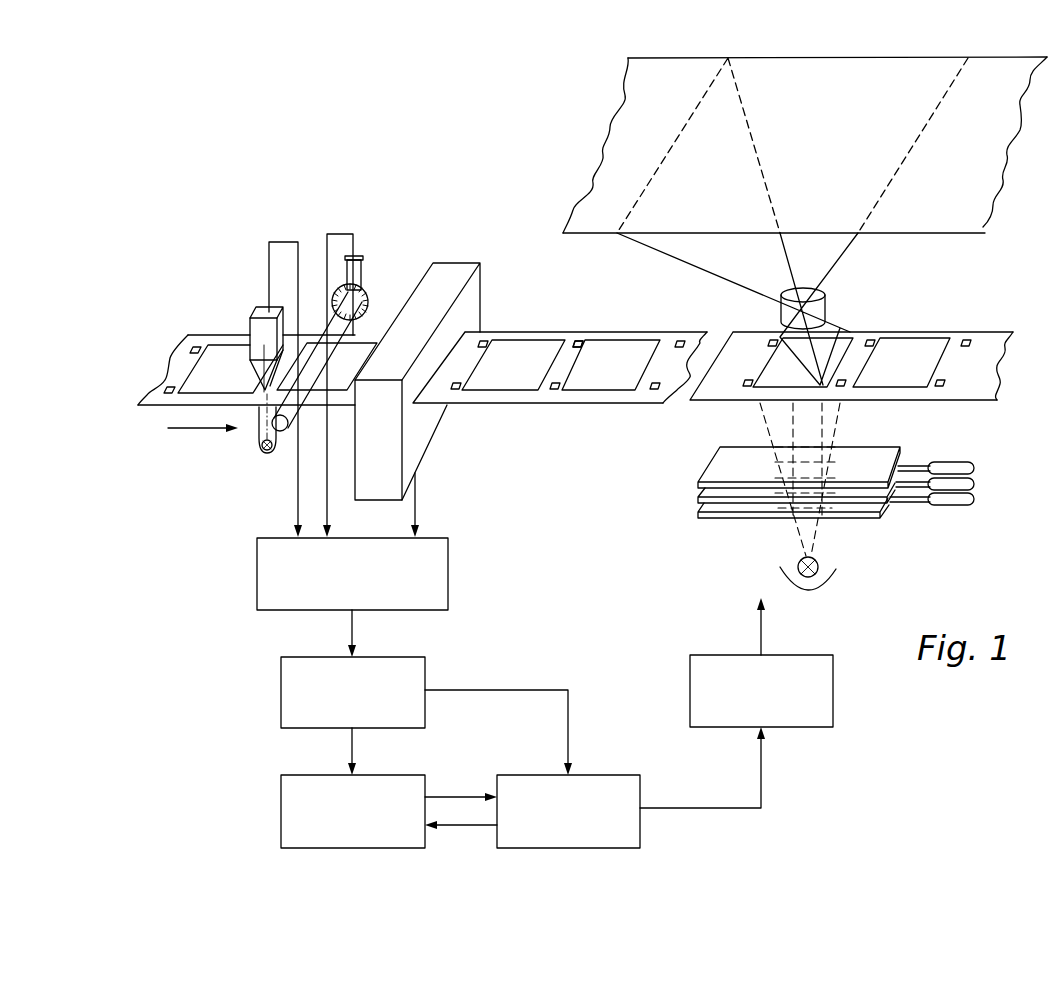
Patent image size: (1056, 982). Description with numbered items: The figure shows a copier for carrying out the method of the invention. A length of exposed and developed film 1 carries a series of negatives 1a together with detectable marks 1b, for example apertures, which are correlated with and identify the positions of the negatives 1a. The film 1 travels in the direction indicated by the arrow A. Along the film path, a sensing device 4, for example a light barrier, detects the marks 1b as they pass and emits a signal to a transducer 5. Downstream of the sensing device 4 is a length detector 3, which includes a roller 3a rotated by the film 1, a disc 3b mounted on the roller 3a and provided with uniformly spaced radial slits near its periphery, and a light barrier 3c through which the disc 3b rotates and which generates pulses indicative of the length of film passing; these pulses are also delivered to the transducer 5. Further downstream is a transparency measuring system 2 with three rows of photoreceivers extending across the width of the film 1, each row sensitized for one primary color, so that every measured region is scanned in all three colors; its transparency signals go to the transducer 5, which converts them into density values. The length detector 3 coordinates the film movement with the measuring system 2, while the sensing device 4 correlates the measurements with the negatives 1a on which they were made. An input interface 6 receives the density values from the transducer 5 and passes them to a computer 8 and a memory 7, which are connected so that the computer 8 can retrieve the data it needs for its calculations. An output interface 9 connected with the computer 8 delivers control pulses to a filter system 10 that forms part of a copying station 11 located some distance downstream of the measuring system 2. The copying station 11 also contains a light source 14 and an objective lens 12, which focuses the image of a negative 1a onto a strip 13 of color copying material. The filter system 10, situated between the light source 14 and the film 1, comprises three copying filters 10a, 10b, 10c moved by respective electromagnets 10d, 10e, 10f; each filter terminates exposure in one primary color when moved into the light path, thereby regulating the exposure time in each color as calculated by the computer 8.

The film 1 is at (210, 336).
The negatives 1a is at (522, 348).
The detectable marks 1b is at (578, 342).
The transparency measuring system 2 is at (450, 264).
The length detector 3 is at (344, 319).
The roller 3a is at (318, 380).
The disc 3b is at (370, 303).
The light barrier 3c is at (369, 258).
The sensing device 4 is at (264, 310).
The transducer 5 is at (450, 566).
The input interface 6 is at (281, 678).
The memory 7 is at (281, 806).
The computer 8 is at (606, 775).
The output interface 9 is at (834, 688).
The filter system 10 is at (841, 492).
The copying filter 10a is at (699, 478).
The copying filter 10b is at (698, 498).
The copying filter 10c is at (698, 515).
The electromagnet 10d is at (972, 468).
The electromagnet 10e is at (975, 482).
The electromagnet 10f is at (973, 500).
The copying station 11 is at (903, 324).
The objective lens 12 is at (824, 312).
The strip of color copying material 13 is at (984, 222).
The light source 14 is at (838, 578).
The direction of travel A is at (203, 442).